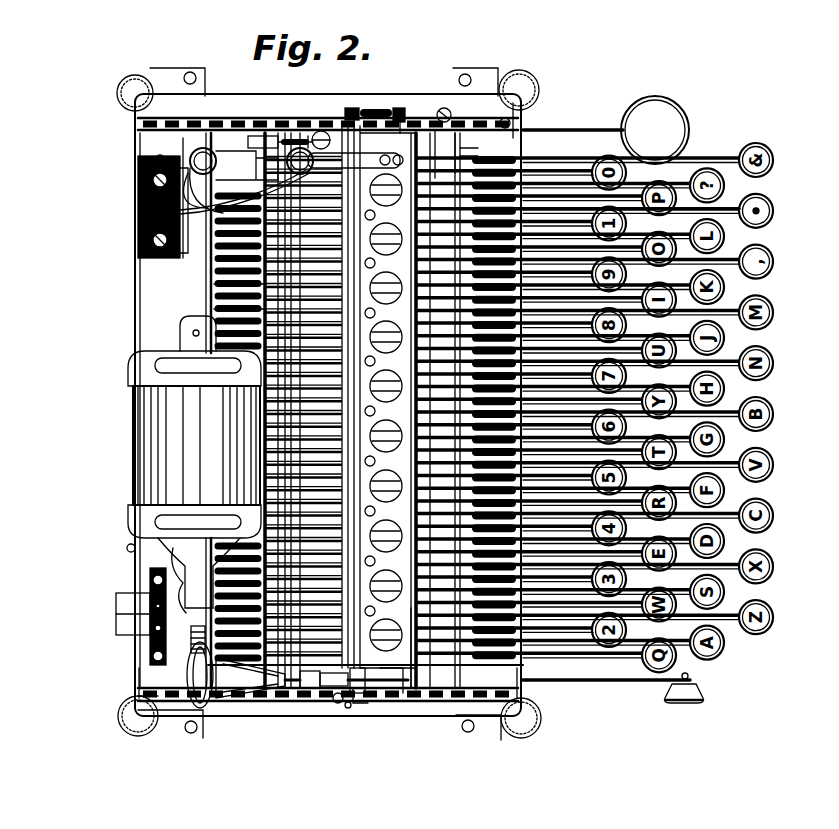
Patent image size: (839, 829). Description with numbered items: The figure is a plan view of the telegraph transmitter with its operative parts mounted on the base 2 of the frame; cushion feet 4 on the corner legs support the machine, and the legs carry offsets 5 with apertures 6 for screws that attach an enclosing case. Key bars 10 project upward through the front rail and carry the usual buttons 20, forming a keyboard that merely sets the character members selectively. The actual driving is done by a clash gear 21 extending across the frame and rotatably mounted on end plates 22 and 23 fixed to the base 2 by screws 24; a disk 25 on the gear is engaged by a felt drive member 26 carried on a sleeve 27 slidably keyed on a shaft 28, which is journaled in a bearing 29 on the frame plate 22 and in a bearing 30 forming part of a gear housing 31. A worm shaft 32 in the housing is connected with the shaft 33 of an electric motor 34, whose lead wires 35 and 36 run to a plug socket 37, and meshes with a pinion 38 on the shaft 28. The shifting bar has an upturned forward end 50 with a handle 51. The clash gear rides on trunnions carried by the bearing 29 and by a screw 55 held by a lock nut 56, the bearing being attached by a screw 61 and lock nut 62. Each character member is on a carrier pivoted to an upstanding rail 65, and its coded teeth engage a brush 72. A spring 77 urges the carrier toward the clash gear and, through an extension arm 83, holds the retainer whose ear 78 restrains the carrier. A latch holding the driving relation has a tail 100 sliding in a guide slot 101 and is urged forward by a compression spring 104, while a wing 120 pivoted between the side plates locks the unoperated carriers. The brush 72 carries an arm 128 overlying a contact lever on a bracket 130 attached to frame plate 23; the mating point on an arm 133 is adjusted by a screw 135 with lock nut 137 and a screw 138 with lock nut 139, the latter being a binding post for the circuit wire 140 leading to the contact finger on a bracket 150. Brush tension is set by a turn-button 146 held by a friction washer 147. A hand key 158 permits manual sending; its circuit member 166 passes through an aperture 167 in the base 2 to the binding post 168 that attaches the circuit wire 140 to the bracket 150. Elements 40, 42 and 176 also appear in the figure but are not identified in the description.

The base 2 is at (490, 700).
The cushion feet 4 is at (520, 72).
The offsets 5 is at (487, 76).
The apertures 6 is at (182, 726).
The key bars 10 is at (722, 200).
The buttons 20 is at (784, 206).
The clash gear 21 is at (375, 130).
The end plate 22 is at (508, 700).
The end plate 23 is at (313, 122).
The screws 24 is at (515, 105).
The disk 25 is at (404, 688).
The drive member 26 is at (352, 680).
The sleeve 27 is at (330, 696).
The shaft 28 is at (282, 680).
The bearing 29 is at (385, 688).
The bearing 30 is at (228, 690).
The gear housing 31 is at (185, 660).
The worm shaft 32 is at (190, 635).
The shaft 33 is at (142, 620).
The electric motor 34 is at (150, 451).
The lead wire 35 is at (170, 556).
The lead wire 36 is at (118, 540).
The plug socket 37 is at (110, 600).
The pinion 38 is at (125, 712).
The collar 40 is at (300, 682).
The sleeve 42 is at (322, 680).
The upturned forward end 50 is at (688, 680).
The handle 51 is at (680, 696).
The screw 55 is at (362, 100).
The lock nut 56 is at (345, 100).
The screw 61 is at (356, 692).
The lock nut 62 is at (340, 700).
The rail 65 is at (438, 100).
The brush 72 is at (427, 122).
The spring 77 is at (462, 148).
The ear 78 is at (470, 140).
The extension arm 83 is at (455, 160).
The tail 100 is at (205, 262).
The guide slot 101 is at (215, 278).
The compression spring 104 is at (210, 300).
The wing 120 is at (238, 142).
The arm 128 is at (392, 100).
The bracket 130 is at (222, 148).
The arm 133 is at (258, 150).
The screw 135 is at (195, 140).
The lock nut 137 is at (172, 145).
The screw 138 is at (285, 140).
The lock nut 139 is at (290, 128).
The circuit wire 140 is at (130, 195).
The turn-button 146 is at (400, 110).
The friction washer 147 is at (395, 148).
The bracket 150 is at (135, 180).
The hand key 158 is at (600, 122).
The circuit member 166 is at (300, 130).
The aperture 167 is at (130, 160).
The binding post 168 is at (135, 210).
The corner bracket 176 is at (108, 82).